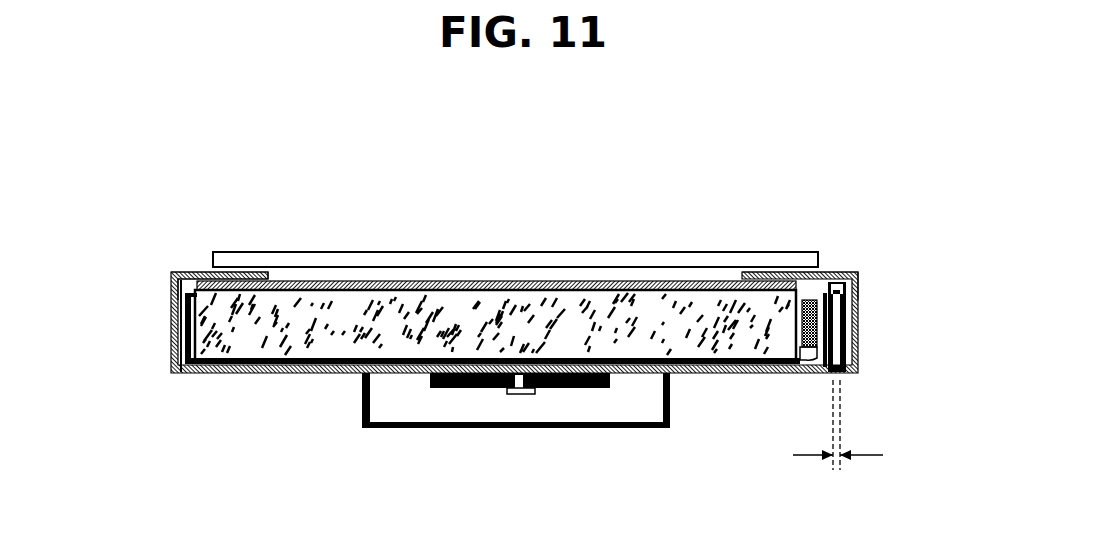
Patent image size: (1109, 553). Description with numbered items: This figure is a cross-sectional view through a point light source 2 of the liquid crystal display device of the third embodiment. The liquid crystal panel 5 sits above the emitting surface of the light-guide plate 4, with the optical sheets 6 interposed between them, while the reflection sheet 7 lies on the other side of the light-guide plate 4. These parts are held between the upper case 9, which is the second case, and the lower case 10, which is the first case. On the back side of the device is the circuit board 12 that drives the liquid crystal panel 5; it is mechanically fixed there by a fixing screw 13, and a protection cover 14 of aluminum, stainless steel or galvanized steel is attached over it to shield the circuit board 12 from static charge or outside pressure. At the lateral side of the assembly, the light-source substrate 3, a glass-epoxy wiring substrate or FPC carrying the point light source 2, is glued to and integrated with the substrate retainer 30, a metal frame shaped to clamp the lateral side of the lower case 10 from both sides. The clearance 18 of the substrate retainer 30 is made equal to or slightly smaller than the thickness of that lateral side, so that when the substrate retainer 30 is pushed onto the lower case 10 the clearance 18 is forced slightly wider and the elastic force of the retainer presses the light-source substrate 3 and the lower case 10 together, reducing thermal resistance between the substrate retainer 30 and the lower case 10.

The point light source 2 is at (803, 357).
The light-source substrate 3 is at (808, 368).
The light-guide plate 4 is at (352, 322).
The liquid crystal panel 5 is at (687, 260).
The optical sheets 6 is at (493, 292).
The reflection sheet 7 is at (200, 374).
The upper case 9 is at (173, 272).
The lower case 10 is at (284, 374).
The circuit board 12 is at (428, 389).
The fixing screw 13 is at (520, 396).
The protection cover 14 is at (363, 426).
The clearance 18 is at (838, 445).
The substrate retainer 30 is at (852, 377).